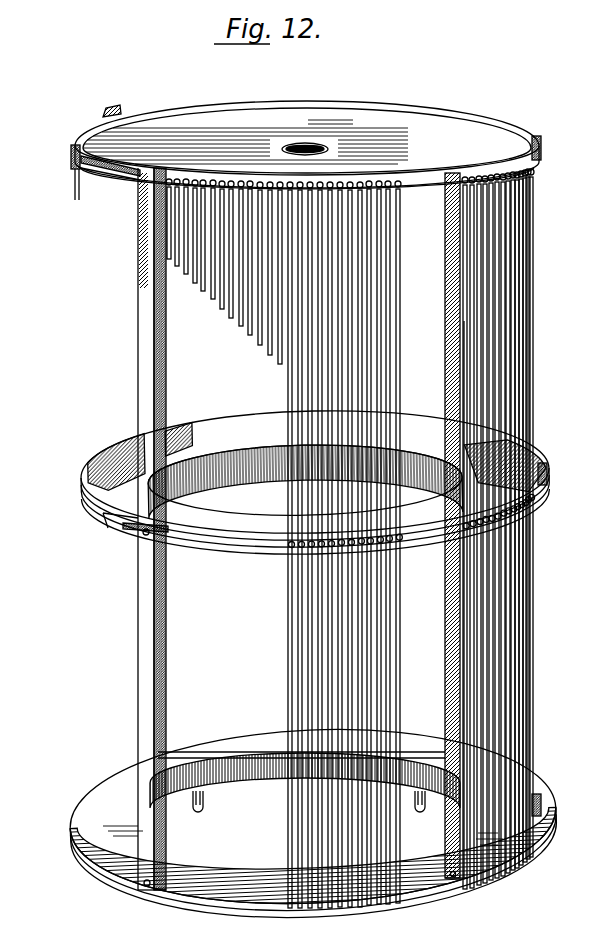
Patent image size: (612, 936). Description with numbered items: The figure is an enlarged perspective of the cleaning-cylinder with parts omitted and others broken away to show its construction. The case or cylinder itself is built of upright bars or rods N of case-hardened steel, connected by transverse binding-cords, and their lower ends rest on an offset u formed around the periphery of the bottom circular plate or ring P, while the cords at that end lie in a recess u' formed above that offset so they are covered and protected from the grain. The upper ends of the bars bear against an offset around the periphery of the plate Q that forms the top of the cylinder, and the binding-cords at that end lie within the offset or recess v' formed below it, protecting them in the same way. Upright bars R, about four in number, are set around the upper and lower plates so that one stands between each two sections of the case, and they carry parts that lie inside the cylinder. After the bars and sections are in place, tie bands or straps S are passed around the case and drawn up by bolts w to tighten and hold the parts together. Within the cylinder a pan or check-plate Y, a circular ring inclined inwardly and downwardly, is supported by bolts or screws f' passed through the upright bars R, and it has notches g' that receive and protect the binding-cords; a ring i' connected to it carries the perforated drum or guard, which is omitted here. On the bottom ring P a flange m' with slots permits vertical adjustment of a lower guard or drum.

The plate Q is at (307, 145).
The bolts w is at (106, 106).
The tie bands or straps S is at (63, 146).
The offset or recess v' is at (110, 176).
The upright bars R is at (130, 386).
The upright bars or rods N is at (281, 381).
The pan or check-plate Y is at (315, 479).
The ring i' is at (304, 480).
The offsets or notches g' is at (137, 533).
The bolts or screws f' is at (120, 542).
The circular plate or ring P is at (312, 817).
The flange m' is at (316, 811).
The offset or recess u' is at (315, 875).
The offset u is at (315, 871).